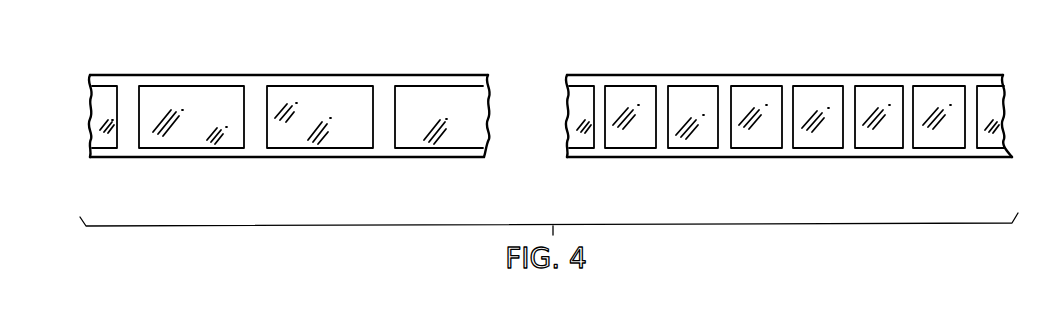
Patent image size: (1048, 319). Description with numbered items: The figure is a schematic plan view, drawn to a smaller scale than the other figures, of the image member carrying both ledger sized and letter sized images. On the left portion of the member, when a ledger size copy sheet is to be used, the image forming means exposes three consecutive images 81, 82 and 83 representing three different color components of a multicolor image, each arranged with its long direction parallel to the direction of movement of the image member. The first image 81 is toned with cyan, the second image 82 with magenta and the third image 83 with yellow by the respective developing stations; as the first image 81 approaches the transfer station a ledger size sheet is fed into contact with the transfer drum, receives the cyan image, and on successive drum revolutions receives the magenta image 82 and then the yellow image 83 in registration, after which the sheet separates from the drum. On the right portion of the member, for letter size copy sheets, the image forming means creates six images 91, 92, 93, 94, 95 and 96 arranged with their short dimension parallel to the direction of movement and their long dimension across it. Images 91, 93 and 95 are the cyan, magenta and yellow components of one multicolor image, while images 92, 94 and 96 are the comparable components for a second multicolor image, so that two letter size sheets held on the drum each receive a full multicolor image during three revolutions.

The first image 81 is at (209, 87).
The second image 82 is at (313, 88).
The third image 83 is at (421, 88).
The image 91 is at (646, 88).
The image 92 is at (715, 88).
The image 93 is at (777, 88).
The image 94 is at (838, 88).
The image 95 is at (894, 88).
The image 96 is at (957, 88).